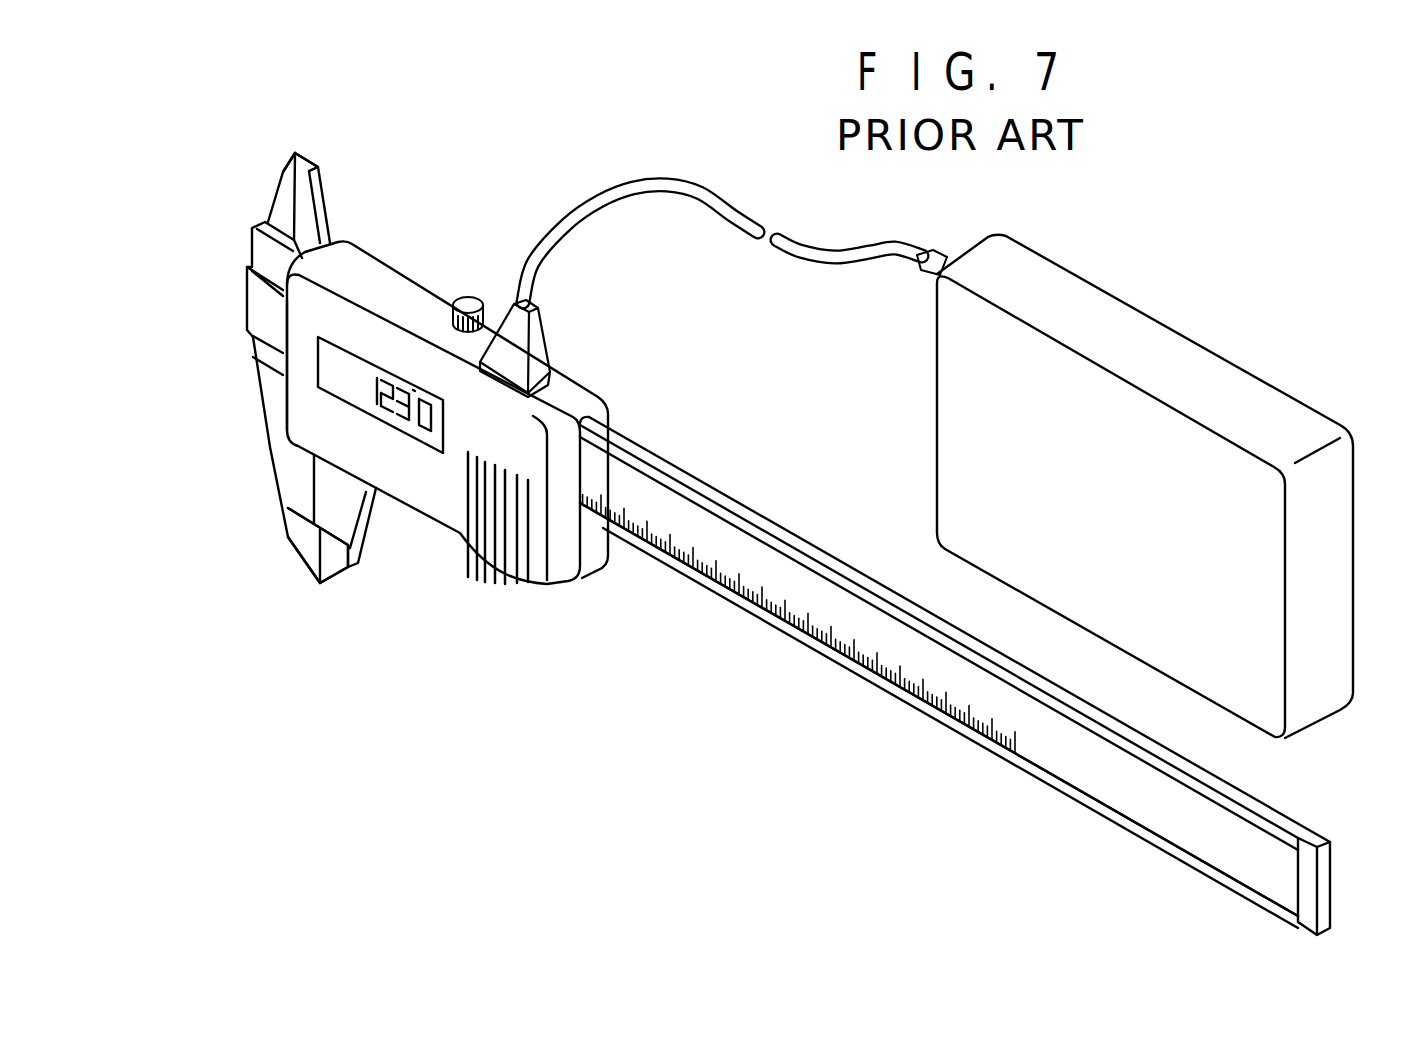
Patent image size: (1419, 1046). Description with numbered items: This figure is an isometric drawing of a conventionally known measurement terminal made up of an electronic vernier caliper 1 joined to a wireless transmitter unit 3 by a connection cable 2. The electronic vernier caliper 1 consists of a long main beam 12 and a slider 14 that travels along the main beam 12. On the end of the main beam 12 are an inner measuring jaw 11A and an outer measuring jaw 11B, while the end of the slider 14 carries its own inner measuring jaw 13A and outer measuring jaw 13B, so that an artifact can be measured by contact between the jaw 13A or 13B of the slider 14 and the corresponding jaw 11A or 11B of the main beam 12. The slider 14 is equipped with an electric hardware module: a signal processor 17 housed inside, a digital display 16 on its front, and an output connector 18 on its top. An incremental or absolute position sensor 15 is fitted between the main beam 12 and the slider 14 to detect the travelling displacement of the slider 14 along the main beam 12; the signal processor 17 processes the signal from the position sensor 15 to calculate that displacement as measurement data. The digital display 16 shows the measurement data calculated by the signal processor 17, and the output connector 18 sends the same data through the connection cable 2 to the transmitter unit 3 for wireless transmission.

The electronic vernier caliper 1 is at (635, 726).
The connection cable 2 is at (712, 190).
The transmitter unit 3 is at (1177, 293).
The inner measuring jaw 11A is at (325, 185).
The outer measuring jaw 11B is at (293, 545).
The main beam 12 is at (847, 663).
The inner measuring jaw 13A is at (285, 178).
The outer measuring jaw 13B is at (342, 575).
The slider 14 is at (447, 527).
The position sensor 15 is at (663, 552).
The digital display 16 is at (317, 377).
The signal processor 17 is at (310, 433).
The output connector 18 is at (480, 387).